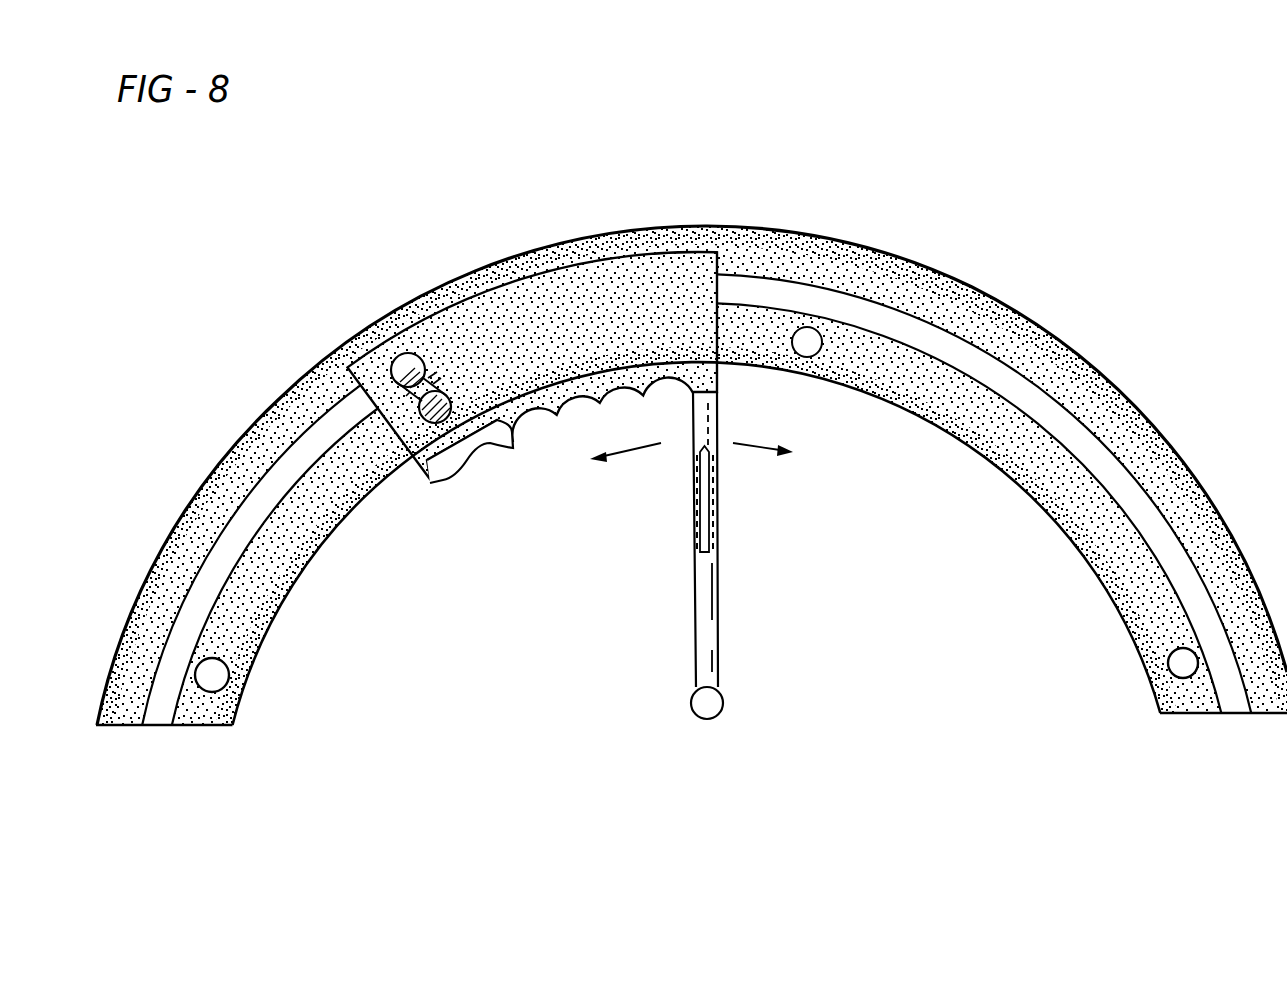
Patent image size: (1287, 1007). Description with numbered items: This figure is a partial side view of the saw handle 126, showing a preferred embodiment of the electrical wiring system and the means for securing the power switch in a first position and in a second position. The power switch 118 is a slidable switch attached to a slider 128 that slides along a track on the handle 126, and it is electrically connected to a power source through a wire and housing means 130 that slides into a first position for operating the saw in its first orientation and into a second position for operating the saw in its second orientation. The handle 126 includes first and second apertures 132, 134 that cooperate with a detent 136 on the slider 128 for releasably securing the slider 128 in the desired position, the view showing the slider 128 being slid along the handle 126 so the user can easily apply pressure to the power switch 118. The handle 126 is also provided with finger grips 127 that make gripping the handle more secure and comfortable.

The handle 126 is at (978, 283).
The slider 128 is at (557, 303).
The power switch 118 is at (470, 462).
The detent 136 is at (450, 380).
The wire and housing means 130 is at (733, 614).
The finger grips 127 is at (725, 474).
The first aperture 132 is at (213, 675).
The second aperture 134 is at (1180, 663).